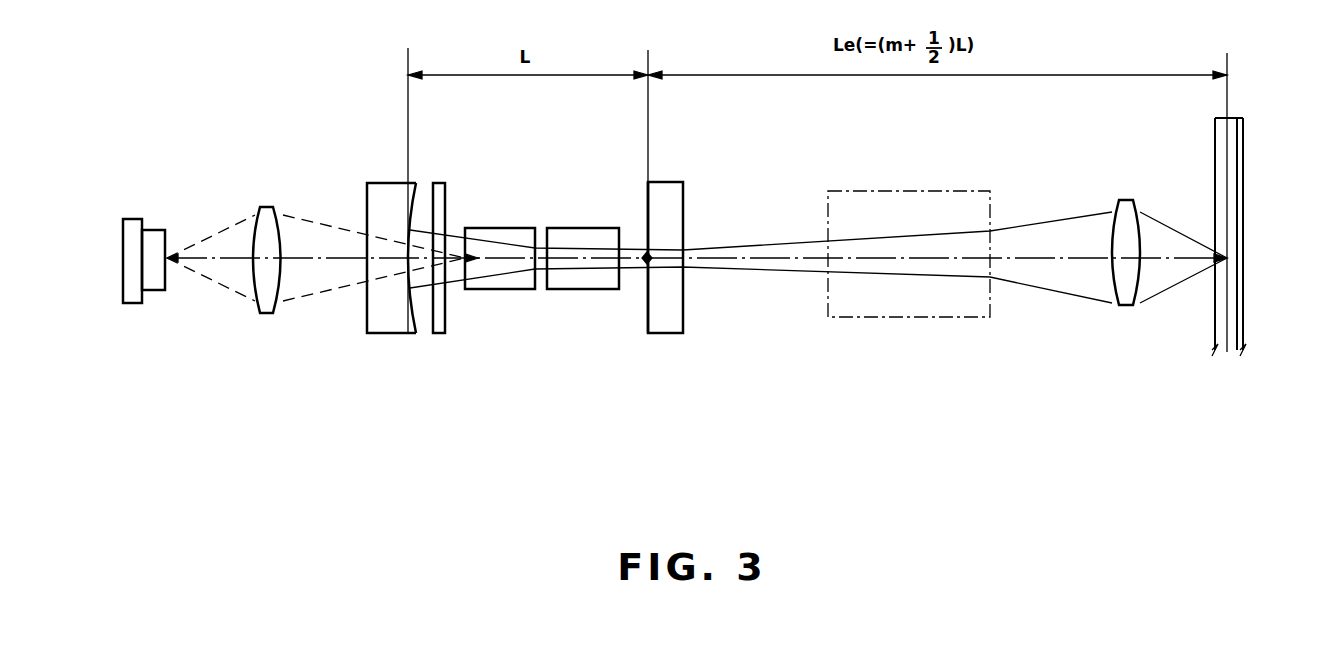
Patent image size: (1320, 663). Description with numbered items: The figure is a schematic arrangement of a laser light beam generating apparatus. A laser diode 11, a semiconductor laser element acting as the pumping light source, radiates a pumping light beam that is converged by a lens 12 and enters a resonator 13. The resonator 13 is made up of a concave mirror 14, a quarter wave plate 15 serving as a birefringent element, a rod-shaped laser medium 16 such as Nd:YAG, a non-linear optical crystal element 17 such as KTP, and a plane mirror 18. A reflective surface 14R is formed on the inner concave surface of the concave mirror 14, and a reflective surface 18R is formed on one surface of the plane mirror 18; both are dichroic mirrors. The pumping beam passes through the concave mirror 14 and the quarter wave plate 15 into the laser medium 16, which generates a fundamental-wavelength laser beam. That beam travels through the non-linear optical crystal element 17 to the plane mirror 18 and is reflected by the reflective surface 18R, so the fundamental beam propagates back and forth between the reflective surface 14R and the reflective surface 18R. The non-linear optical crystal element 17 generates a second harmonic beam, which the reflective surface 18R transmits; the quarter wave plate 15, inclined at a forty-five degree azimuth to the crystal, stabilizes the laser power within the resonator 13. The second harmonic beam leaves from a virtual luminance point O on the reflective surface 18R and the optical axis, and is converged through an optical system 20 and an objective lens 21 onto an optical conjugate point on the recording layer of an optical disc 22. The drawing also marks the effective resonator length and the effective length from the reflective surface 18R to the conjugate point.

The laser diode 11 is at (153, 240).
The lens 12 is at (268, 207).
The resonator 13 is at (526, 268).
The concave mirror 14 is at (411, 263).
The reflective surface 14R is at (418, 318).
The quarter wave plate 15 is at (442, 190).
The laser medium 16 is at (508, 228).
The non-linear optical crystal element 17 is at (527, 310).
The plane mirror 18 is at (636, 230).
The reflective surface 18R is at (647, 217).
The point O is at (650, 256).
The optical system 20 is at (908, 317).
The objective lens 21 is at (1127, 305).
The optical disc 22 is at (1237, 118).